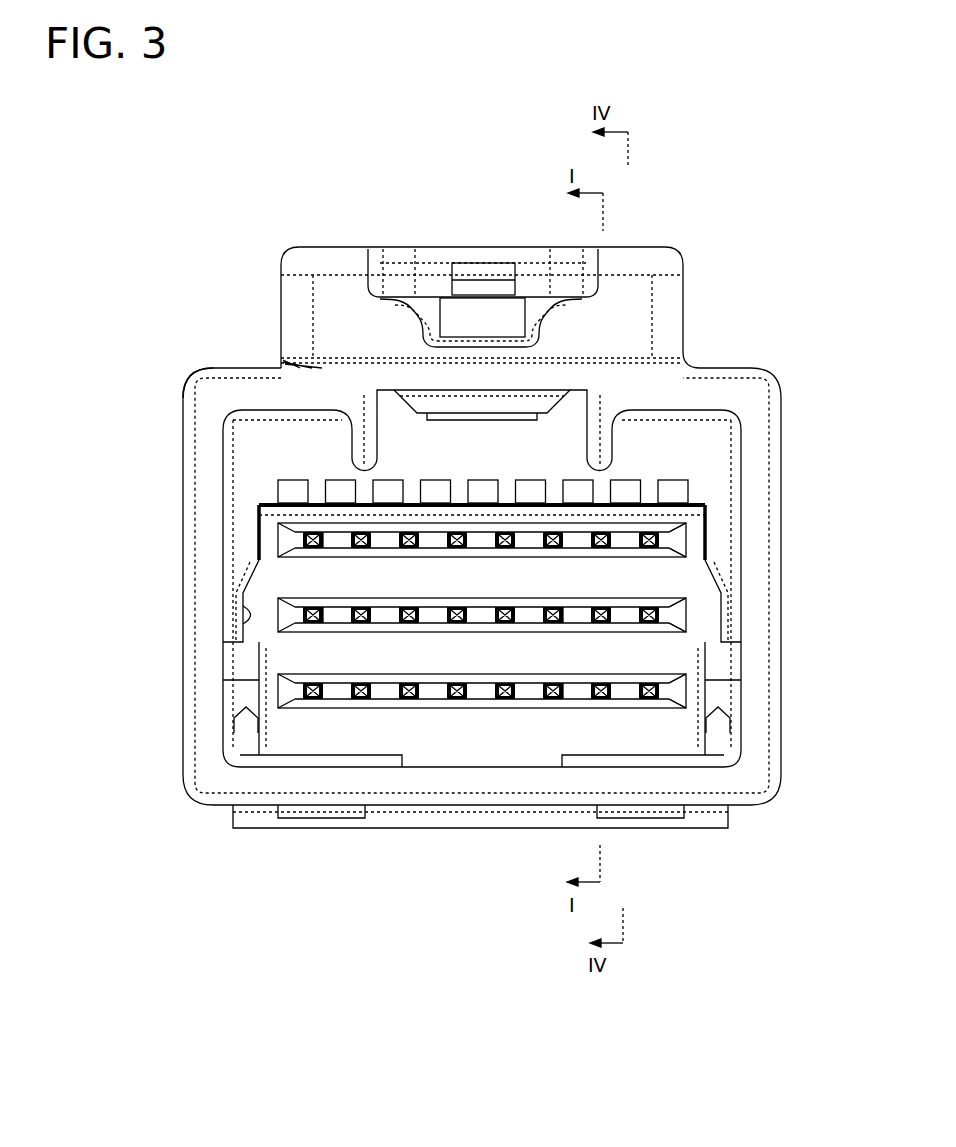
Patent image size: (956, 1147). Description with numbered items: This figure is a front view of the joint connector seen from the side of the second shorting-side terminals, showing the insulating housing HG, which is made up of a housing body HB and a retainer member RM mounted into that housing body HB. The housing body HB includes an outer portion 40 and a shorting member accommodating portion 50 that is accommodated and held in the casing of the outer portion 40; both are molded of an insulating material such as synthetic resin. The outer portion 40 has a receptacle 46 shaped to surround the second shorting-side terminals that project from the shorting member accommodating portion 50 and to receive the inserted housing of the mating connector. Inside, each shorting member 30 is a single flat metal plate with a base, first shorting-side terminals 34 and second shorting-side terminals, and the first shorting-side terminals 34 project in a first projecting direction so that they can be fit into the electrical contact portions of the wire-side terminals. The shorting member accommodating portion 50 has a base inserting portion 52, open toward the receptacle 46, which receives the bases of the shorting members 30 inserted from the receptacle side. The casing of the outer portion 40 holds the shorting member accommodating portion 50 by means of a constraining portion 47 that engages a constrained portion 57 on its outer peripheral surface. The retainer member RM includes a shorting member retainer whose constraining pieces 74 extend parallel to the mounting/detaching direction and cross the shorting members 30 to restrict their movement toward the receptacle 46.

The insulating housing HG is at (301, 218).
The housing body HB is at (808, 278).
The retainer member RM is at (348, 829).
The shorting member 30 is at (293, 615).
The first shorting-side terminal 34 is at (520, 543).
The outer portion 40 is at (703, 353).
The receptacle 46 is at (210, 392).
The constraining portion 47 is at (248, 620).
The shorting member accommodating portion 50 is at (690, 504).
The base inserting portion 52 is at (670, 540).
The constrained portion 57 is at (706, 597).
The constraining piece 74 is at (433, 617).